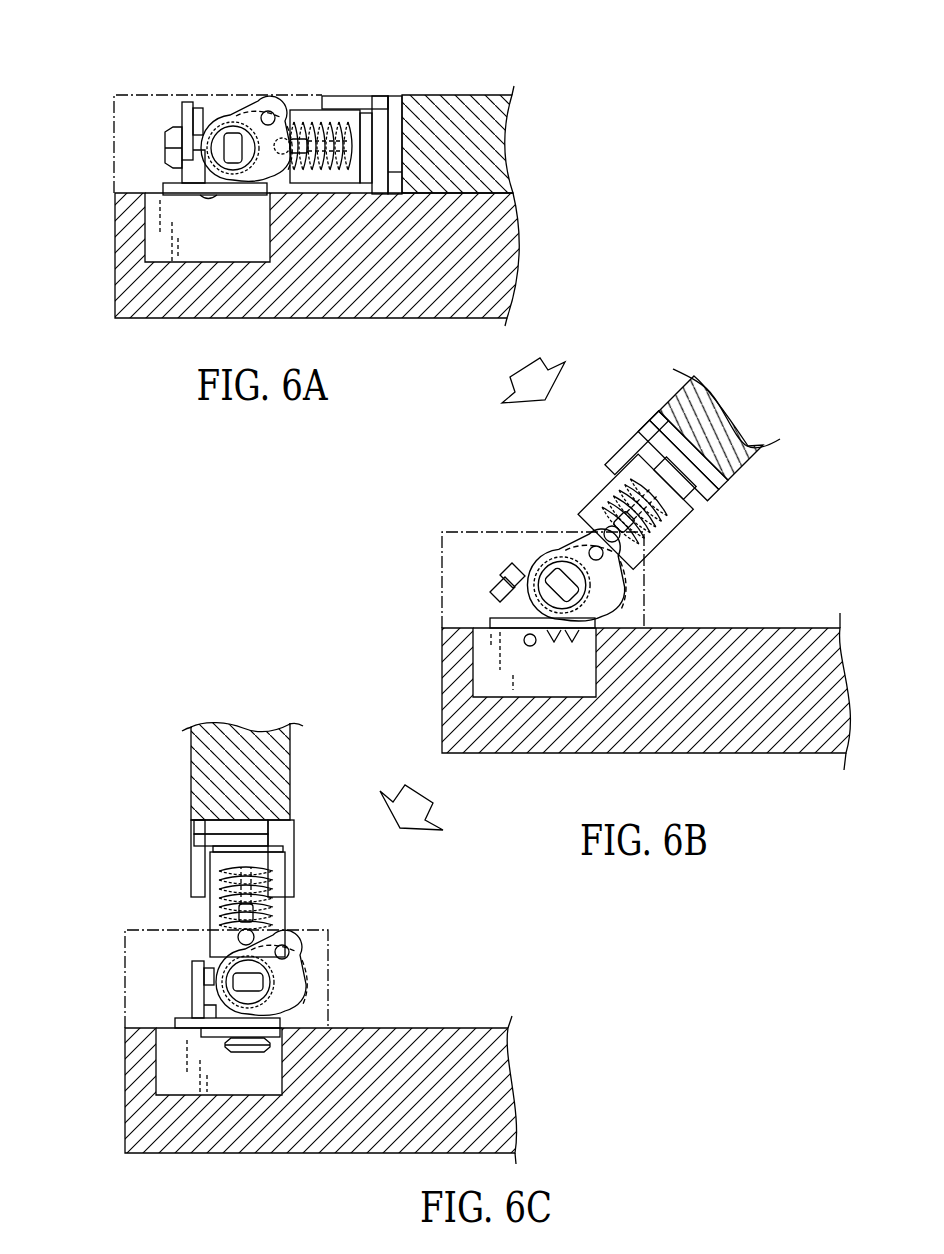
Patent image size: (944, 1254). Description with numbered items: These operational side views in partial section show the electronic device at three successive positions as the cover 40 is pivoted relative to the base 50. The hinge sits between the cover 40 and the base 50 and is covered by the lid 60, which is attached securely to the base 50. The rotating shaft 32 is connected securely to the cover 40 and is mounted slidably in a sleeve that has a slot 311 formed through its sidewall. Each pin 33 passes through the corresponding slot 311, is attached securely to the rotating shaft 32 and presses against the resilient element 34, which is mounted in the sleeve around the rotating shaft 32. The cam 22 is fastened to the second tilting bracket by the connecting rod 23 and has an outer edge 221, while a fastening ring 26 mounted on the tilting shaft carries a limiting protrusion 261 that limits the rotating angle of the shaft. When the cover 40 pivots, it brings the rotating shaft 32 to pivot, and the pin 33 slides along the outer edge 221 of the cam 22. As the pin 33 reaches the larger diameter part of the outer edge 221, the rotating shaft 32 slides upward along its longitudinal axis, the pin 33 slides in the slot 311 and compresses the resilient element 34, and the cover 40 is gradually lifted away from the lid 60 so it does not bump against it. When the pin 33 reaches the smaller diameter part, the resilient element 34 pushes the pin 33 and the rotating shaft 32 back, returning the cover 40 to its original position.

In FIG. 6A, the cam 22 is at (243, 116).
In FIG. 6B, the cam 22 is at (559, 541).
In FIG. 6C, the cam 22 is at (308, 992).
In FIG. 6A, the outer edge 221 is at (235, 113).
In FIG. 6B, the outer edge 221 is at (581, 546).
In FIG. 6C, the outer edge 221 is at (292, 976).
In FIG. 6A, the connecting rod 23 is at (267, 111).
In FIG. 6B, the connecting rod 23 is at (601, 558).
In FIG. 6C, the connecting rod 23 is at (289, 955).
In FIG. 6C, the fastening ring 26 is at (222, 983).
In FIG. 6B, the limiting protrusion 261 is at (529, 601).
In FIG. 6C, the limiting protrusion 261 is at (208, 1019).
In FIG. 6A, the slot 311 is at (292, 158).
In FIG. 6C, the slot 311 is at (254, 913).
In FIG. 6B, the rotating shaft 32 is at (667, 493).
In FIG. 6A, the pin 33 is at (284, 136).
In FIG. 6B, the pin 33 is at (618, 542).
In FIG. 6C, the pin 33 is at (237, 935).
In FIG. 6A, the resilient element 34 is at (336, 125).
In FIG. 6B, the resilient element 34 is at (617, 490).
In FIG. 6C, the resilient element 34 is at (266, 877).
In FIG. 6A, the cover 40 is at (459, 108).
In FIG. 6B, the cover 40 is at (704, 391).
In FIG. 6C, the cover 40 is at (278, 775).
In FIG. 6A, the base 50 is at (413, 310).
In FIG. 6B, the base 50 is at (761, 741).
In FIG. 6C, the base 50 is at (459, 1040).
In FIG. 6A, the lid 60 is at (120, 96).
In FIG. 6B, the lid 60 is at (452, 535).